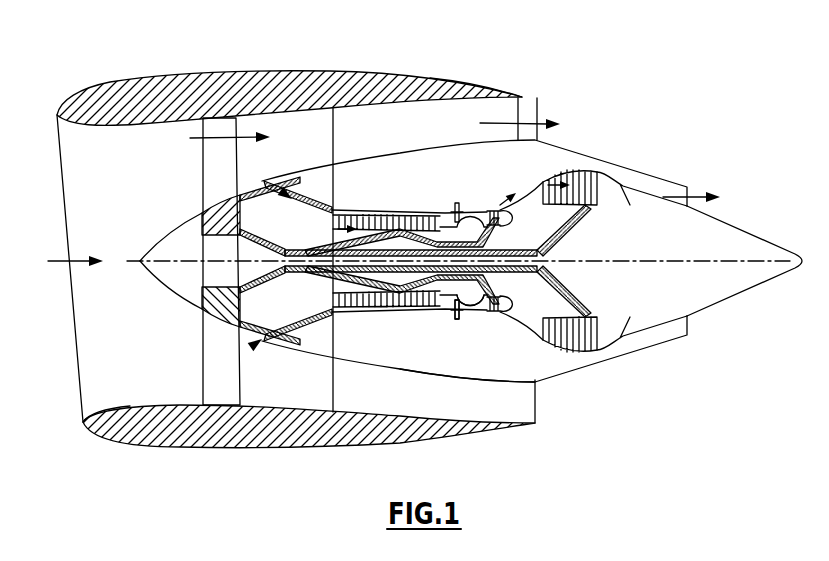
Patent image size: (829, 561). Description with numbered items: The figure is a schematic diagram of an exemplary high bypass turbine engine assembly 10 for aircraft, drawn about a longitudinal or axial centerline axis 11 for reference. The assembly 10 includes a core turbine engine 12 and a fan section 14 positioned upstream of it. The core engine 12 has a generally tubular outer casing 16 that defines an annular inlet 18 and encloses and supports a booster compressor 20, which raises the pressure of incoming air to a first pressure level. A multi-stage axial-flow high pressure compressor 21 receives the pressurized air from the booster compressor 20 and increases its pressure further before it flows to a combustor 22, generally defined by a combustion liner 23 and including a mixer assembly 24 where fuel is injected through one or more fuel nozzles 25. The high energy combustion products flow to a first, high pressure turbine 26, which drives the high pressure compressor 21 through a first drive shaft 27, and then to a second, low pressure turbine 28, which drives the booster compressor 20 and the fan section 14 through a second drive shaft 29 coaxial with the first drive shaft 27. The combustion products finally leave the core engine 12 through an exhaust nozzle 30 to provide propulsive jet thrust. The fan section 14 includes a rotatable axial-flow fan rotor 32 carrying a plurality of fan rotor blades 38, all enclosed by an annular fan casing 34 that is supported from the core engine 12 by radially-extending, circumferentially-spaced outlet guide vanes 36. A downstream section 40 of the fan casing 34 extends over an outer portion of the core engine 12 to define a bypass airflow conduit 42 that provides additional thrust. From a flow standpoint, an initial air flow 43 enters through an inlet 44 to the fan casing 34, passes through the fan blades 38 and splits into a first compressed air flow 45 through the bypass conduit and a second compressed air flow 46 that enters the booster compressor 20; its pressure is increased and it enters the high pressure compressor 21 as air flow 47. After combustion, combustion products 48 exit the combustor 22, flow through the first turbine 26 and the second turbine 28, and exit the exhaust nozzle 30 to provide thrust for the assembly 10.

The turbine engine assembly 10 is at (636, 85).
The longitudinal or axial centerline axis 11 is at (657, 258).
The core turbine engine 12 is at (452, 182).
The fan section 14 is at (233, 56).
The outer casing 16 is at (435, 373).
The annular inlet 18 is at (256, 345).
The booster compressor 20 is at (312, 307).
The high pressure compressor 21 is at (350, 298).
The combustor 22 is at (467, 310).
The combustion liner 23 is at (470, 310).
The mixer assembly 24 is at (440, 198).
The fuel nozzles 25 is at (457, 309).
The first (high pressure) turbine 26 is at (547, 280).
The first (high pressure) drive shaft 27 is at (498, 240).
The second (low pressure) turbine 28 is at (593, 353).
The second (low pressure) drive shaft 29 is at (316, 251).
The exhaust nozzle 30 is at (690, 193).
The fan rotor 32 is at (238, 238).
The fan casing 34 is at (230, 448).
The outlet guide vanes 36 is at (333, 128).
The fan rotor blades 38 is at (201, 368).
The downstream section of fan casing 40 is at (475, 93).
The bypass airflow conduit 42 is at (428, 137).
The initial air flow 43 is at (77, 260).
The inlet 44 is at (80, 413).
The first compressed air flow 45 is at (210, 137).
The second compressed air flow 46 is at (253, 187).
The air flow entering high pressure compressor 47 is at (343, 217).
The combustion products 48 is at (497, 209).